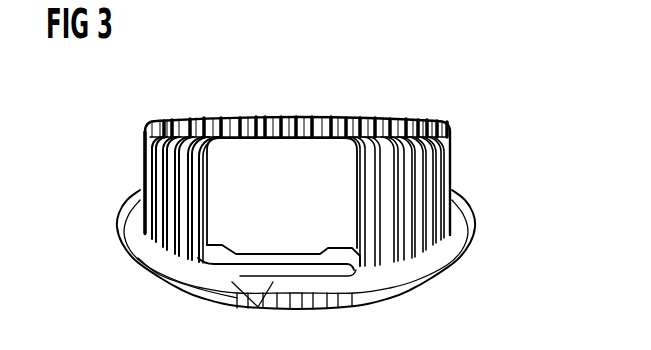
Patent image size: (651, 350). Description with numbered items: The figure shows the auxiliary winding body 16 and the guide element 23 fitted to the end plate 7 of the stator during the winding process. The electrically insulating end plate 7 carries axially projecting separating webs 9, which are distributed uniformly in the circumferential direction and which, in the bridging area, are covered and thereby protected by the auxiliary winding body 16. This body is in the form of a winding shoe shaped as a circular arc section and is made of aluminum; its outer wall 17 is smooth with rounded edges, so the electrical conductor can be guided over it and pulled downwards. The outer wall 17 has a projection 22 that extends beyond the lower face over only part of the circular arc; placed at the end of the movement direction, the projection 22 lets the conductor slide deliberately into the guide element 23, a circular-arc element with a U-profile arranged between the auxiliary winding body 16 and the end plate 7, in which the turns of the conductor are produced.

The end plate 7 is at (404, 112).
The separating webs 9 is at (393, 178).
The auxiliary winding body 16 is at (235, 147).
The outer wall 17 is at (231, 195).
The projection 22 is at (265, 253).
The guide element 23 is at (246, 306).